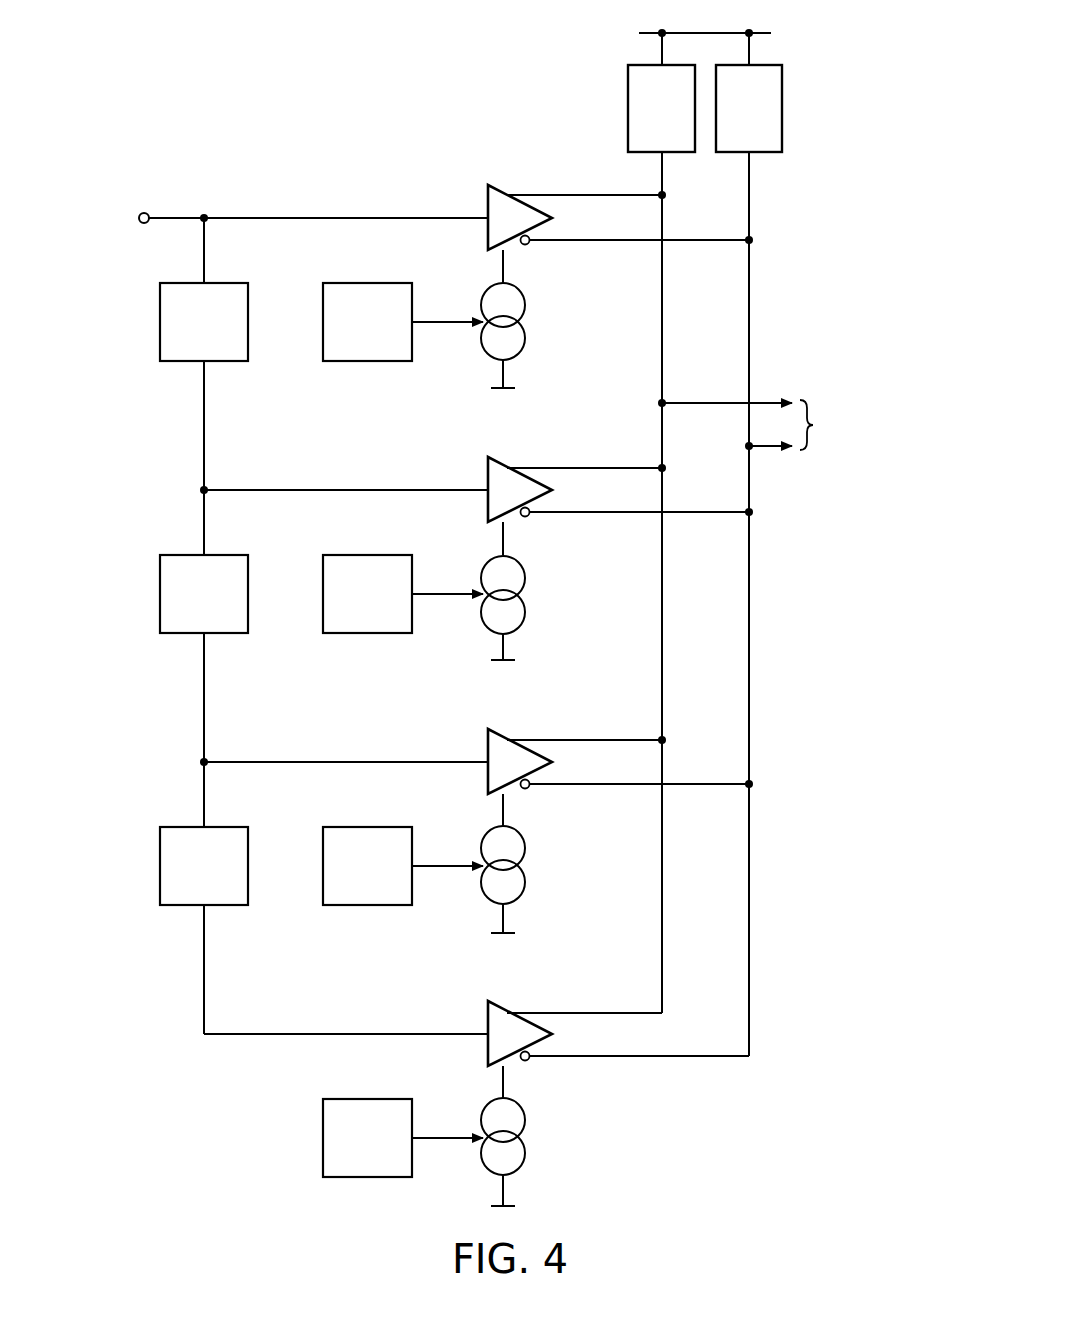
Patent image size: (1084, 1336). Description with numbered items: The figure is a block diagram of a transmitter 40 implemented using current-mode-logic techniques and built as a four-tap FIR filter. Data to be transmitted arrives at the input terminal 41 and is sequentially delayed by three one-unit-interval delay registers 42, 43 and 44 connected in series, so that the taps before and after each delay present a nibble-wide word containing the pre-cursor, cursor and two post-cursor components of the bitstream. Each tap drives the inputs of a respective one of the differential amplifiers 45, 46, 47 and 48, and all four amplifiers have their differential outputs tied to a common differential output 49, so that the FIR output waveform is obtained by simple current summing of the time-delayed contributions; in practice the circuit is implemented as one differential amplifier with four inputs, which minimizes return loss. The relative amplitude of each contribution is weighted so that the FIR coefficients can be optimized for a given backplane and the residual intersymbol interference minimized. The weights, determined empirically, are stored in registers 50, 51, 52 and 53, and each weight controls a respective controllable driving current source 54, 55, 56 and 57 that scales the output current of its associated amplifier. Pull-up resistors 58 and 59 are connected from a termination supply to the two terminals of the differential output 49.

The feed-forward equalizer circuit 40 is at (310, 106).
The terminal 41 is at (141, 212).
The 1 UI delay register 42 is at (160, 322).
The 1 UI delay register 43 is at (160, 592).
The 1 UI delay register 44 is at (160, 866).
The differential amplifier 45 is at (488, 205).
The differential amplifier 46 is at (488, 477).
The differential amplifier 47 is at (488, 775).
The differential amplifier 48 is at (488, 1047).
The common differential output 49 is at (795, 425).
The register 50 is at (365, 283).
The register 51 is at (365, 555).
The register 52 is at (368, 905).
The register 53 is at (368, 1177).
The controllable driving current source 54 is at (538, 315).
The controllable driving current source 55 is at (538, 588).
The controllable driving current source 56 is at (540, 874).
The controllable driving current source 57 is at (540, 1145).
The pull-up resistor 58 is at (678, 123).
The pull-up resistor 59 is at (765, 123).